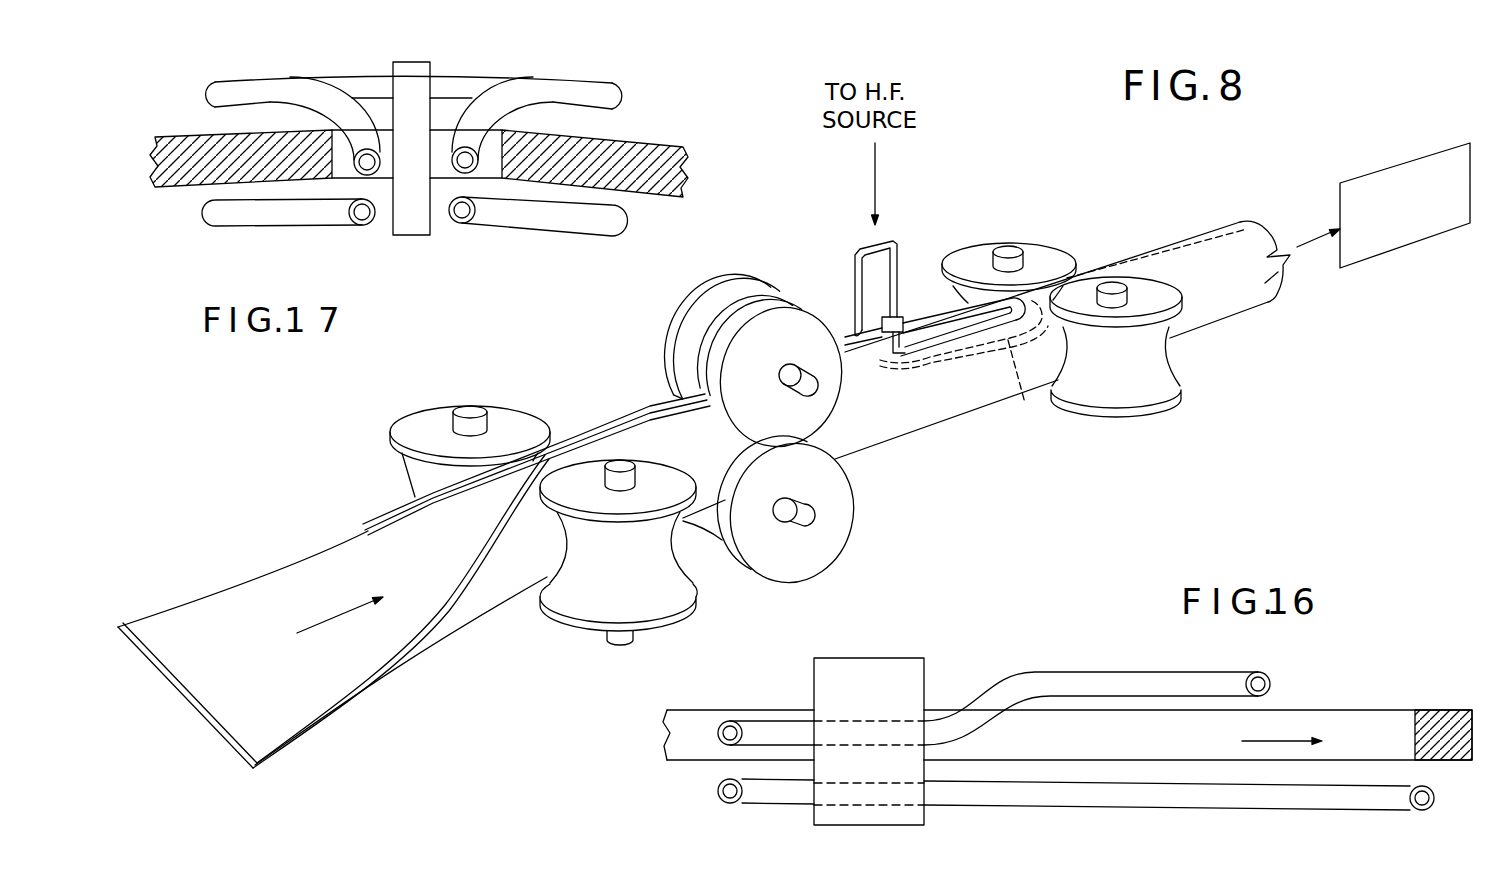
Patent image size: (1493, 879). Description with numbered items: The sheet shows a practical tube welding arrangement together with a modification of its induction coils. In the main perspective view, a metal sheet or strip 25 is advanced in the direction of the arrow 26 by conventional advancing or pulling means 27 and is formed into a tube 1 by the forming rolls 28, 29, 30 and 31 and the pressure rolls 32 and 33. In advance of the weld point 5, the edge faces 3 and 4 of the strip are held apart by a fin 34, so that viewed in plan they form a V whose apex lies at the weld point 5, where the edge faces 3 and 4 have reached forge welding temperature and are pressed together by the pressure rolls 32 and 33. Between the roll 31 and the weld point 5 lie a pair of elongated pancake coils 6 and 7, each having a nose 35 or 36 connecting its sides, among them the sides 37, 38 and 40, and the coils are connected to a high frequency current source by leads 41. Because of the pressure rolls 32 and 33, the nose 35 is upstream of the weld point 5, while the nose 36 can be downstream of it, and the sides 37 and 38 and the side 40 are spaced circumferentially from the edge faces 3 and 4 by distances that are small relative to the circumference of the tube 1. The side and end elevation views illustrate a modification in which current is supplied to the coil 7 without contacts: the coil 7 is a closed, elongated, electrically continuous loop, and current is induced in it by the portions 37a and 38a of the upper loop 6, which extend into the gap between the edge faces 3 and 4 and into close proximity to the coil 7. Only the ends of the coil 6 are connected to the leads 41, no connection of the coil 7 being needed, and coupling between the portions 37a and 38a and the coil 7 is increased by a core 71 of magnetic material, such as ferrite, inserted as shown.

In FIG. 8, the tube 1 is at (1210, 322).
In FIG. 17, the tube 1 is at (642, 143).
In FIG. 16, the tube 1 is at (1327, 710).
In FIG. 8, the edge face 3 is at (493, 463).
In FIG. 17, the edge face 3 is at (334, 172).
In FIG. 16, the edge face 3 is at (697, 710).
In FIG. 8, the edge face 4 is at (347, 708).
In FIG. 17, the edge face 4 is at (489, 172).
In FIG. 8, the weld point 5 is at (1050, 290).
In FIG. 16, the weld point 5 is at (1431, 711).
In FIG. 8, the pancake coil 6 is at (947, 300).
In FIG. 17, the pancake coil 6 is at (485, 74).
In FIG. 16, the pancake coil 6 is at (1107, 667).
In FIG. 8, the pancake coil 7 is at (978, 352).
In FIG. 17, the pancake coil 7 is at (556, 234).
In FIG. 16, the pancake coil 7 is at (1137, 812).
In FIG. 8, the metal sheet or strip 25 is at (387, 675).
In FIG. 8, the arrow 26 is at (323, 624).
In FIG. 8, the advancing or pulling means 27 is at (1380, 255).
In FIG. 8, the forming roll 28 is at (396, 428).
In FIG. 8, the forming roll 29 is at (663, 620).
In FIG. 8, the forming roll 30 is at (813, 557).
In FIG. 8, the forming roll 31 is at (673, 327).
In FIG. 8, the pressure roll 32 is at (963, 246).
In FIG. 8, the pressure roll 33 is at (1133, 410).
In FIG. 8, the fin 34 is at (777, 297).
In FIG. 8, the nose 35 is at (1030, 310).
In FIG. 8, the nose 36 is at (1127, 330).
In FIG. 8, the side 37 is at (905, 317).
In FIG. 8, the side 38 is at (920, 355).
In FIG. 17, the portion of the upper loop 37a is at (382, 177).
In FIG. 16, the portion of the upper loop 37a is at (769, 728).
In FIG. 17, the portion of the upper loop 38a is at (457, 177).
In FIG. 8, the side 40 is at (965, 350).
In FIG. 8, the leads 41 is at (890, 236).
In FIG. 17, the core 71 is at (432, 61).
In FIG. 16, the core 71 is at (847, 658).